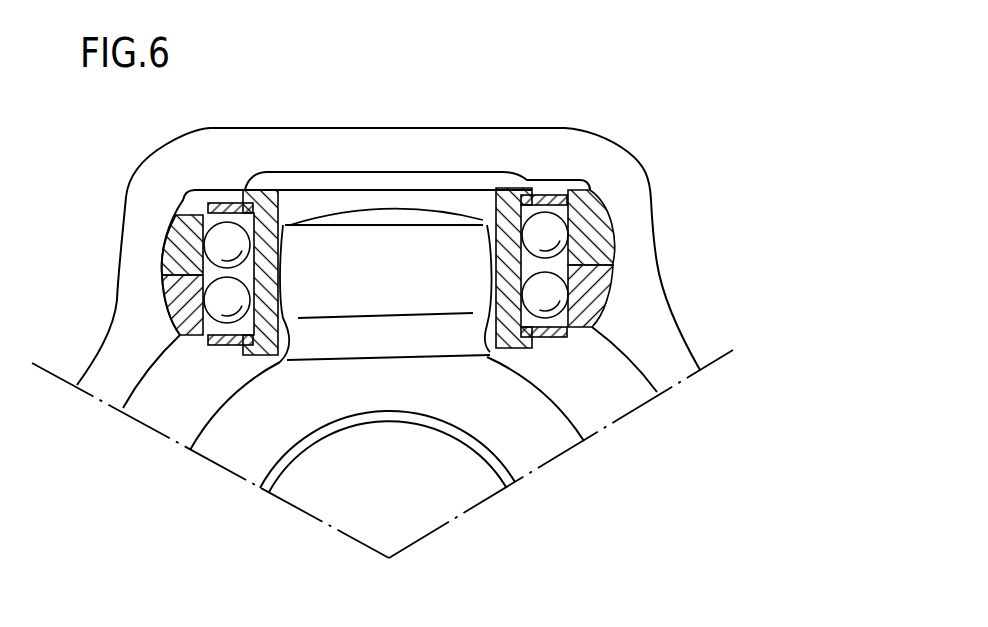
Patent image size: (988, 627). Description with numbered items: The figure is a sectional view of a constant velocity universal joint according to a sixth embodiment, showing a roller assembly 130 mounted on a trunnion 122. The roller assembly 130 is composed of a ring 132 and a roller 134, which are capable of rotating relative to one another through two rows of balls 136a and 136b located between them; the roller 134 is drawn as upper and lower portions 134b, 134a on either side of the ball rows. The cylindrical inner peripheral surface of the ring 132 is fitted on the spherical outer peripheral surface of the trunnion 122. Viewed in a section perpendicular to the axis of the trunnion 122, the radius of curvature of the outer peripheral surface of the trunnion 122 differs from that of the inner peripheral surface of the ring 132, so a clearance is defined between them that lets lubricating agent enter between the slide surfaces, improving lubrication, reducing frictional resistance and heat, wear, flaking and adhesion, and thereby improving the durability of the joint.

The trunnion 122 is at (413, 288).
The roller assembly 130 is at (578, 185).
The ring 132 is at (507, 197).
The roller 134 is at (691, 252).
The lower cup portion 134a is at (603, 278).
The upper cup portion 134b is at (600, 240).
The balls 136a is at (548, 295).
The balls 136b is at (548, 233).